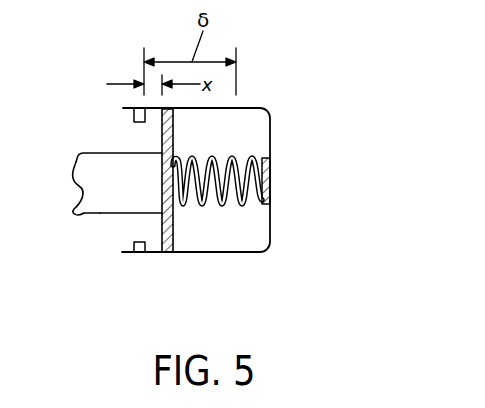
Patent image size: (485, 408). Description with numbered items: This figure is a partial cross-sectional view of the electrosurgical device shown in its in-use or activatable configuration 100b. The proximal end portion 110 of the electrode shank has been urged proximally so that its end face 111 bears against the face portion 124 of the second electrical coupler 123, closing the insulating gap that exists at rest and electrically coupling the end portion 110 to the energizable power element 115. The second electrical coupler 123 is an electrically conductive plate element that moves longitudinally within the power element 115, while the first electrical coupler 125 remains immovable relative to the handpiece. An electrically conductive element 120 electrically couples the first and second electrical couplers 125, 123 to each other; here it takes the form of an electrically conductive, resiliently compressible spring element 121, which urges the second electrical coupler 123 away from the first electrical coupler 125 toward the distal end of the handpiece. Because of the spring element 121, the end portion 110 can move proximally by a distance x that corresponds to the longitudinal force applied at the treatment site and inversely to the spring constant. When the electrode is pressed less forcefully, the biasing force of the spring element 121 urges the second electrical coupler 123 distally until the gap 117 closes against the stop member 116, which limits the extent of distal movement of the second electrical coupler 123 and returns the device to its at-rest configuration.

The in-use (activatable) configuration 100b is at (330, 130).
The proximal end portion of electrode shank 110 is at (101, 212).
The end face 111 is at (135, 180).
The face portion 124 is at (135, 180).
The energizable power element 115 is at (233, 252).
The stop member 116 is at (139, 254).
The gap 117 is at (153, 240).
The electrically conductive element 120 is at (199, 201).
The resiliently compressible spring element 121 is at (233, 157).
The second electrical coupler 123 is at (173, 213).
The first electrical coupler 125 is at (267, 172).